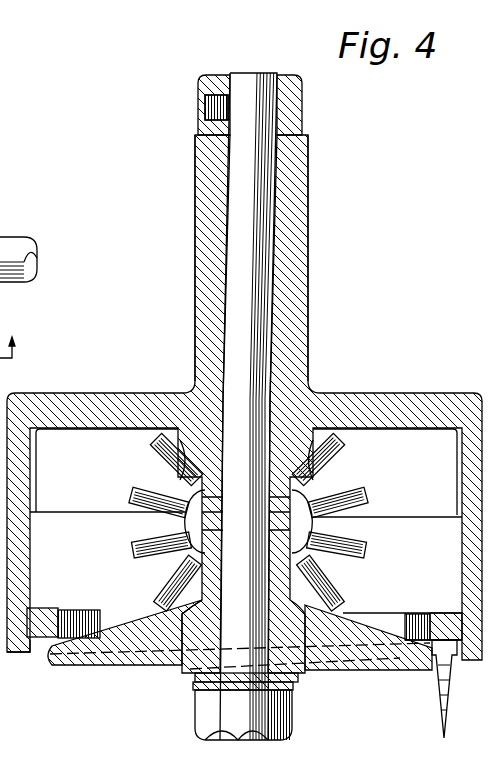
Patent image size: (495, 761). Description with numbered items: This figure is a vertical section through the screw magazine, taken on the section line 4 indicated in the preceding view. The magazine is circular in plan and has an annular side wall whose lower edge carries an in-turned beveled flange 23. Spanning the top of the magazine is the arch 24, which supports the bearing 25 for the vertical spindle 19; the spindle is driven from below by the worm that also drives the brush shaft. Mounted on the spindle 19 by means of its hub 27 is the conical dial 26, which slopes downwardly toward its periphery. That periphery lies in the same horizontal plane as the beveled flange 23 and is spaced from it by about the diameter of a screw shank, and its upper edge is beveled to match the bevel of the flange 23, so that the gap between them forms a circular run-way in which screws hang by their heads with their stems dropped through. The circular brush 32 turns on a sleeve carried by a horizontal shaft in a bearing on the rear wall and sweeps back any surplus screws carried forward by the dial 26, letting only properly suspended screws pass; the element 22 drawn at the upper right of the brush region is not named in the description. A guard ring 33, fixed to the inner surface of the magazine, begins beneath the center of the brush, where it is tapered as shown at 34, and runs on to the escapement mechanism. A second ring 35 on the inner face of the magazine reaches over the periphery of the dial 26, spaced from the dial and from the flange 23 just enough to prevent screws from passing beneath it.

The section line 4 is at (17, 349).
The spindle 19 is at (262, 228).
The cutter blade 22 is at (338, 440).
The beveled flange 23 is at (32, 646).
The arch 24 is at (110, 395).
The bearing 25 is at (298, 289).
The conical dial 26 is at (127, 650).
The hub 27 is at (306, 562).
The circular brush 32 is at (130, 545).
The guard ring 33 is at (395, 618).
The tapered portion 34 is at (323, 620).
The ring 35 is at (47, 606).